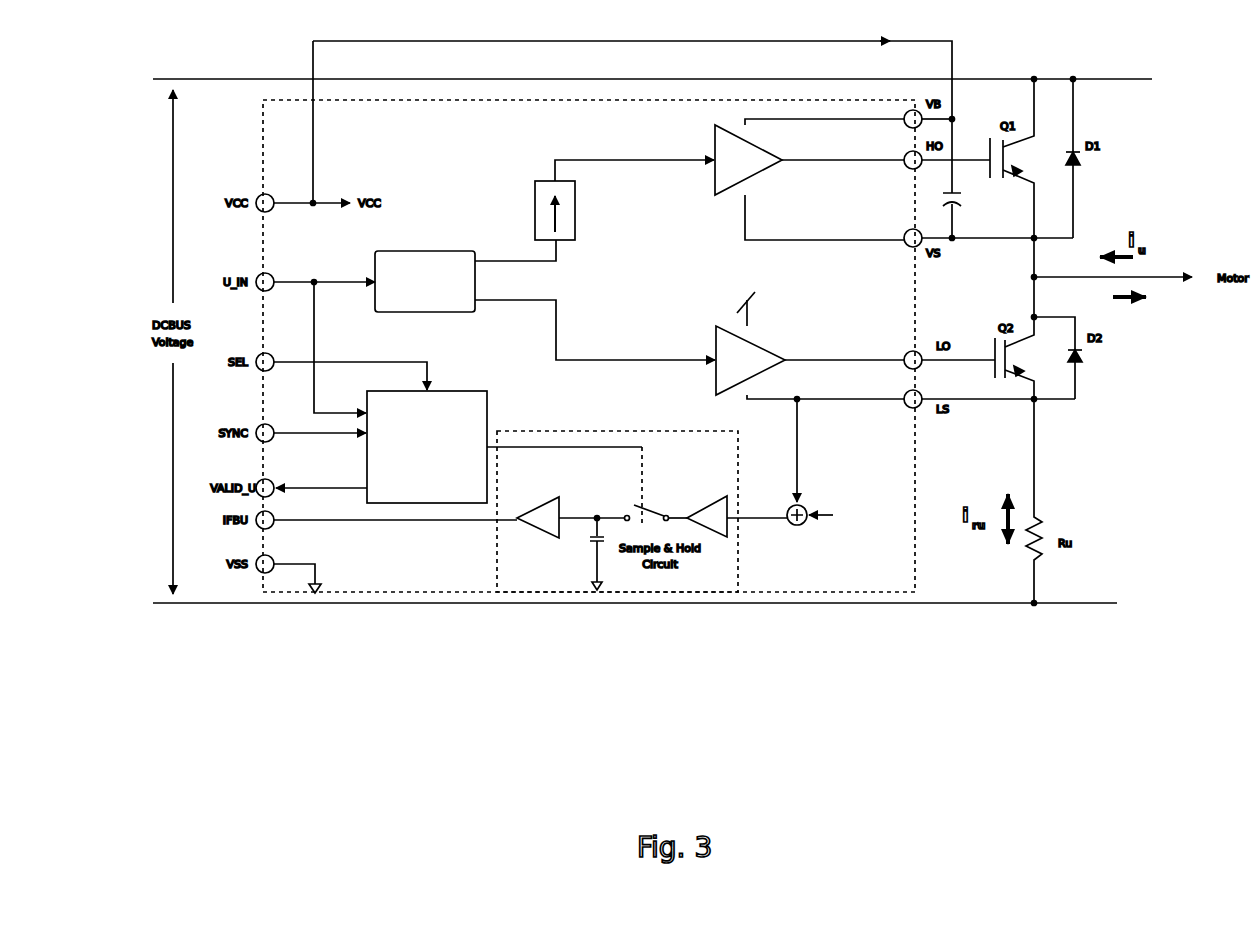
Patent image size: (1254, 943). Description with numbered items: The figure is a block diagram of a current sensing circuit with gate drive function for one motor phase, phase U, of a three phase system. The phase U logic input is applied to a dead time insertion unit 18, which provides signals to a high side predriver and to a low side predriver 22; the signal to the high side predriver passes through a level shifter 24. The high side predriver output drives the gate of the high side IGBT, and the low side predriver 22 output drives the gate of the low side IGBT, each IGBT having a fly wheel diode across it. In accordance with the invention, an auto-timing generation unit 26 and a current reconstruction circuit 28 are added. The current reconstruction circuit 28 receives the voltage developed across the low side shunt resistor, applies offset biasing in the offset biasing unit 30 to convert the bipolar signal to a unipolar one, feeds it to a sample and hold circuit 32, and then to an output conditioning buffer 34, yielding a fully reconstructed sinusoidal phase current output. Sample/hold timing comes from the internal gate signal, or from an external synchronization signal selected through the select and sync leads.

The dead time insertion unit 18 is at (452, 251).
The low side predriver 22 is at (773, 158).
The level shifter 24 is at (582, 192).
The auto-timing generation unit 26 is at (492, 425).
The current reconstruction circuit 28 is at (745, 443).
The offset biasing unit 30 is at (793, 533).
The sample and hold circuit 32 is at (653, 502).
The output conditioning buffer 34 is at (567, 502).